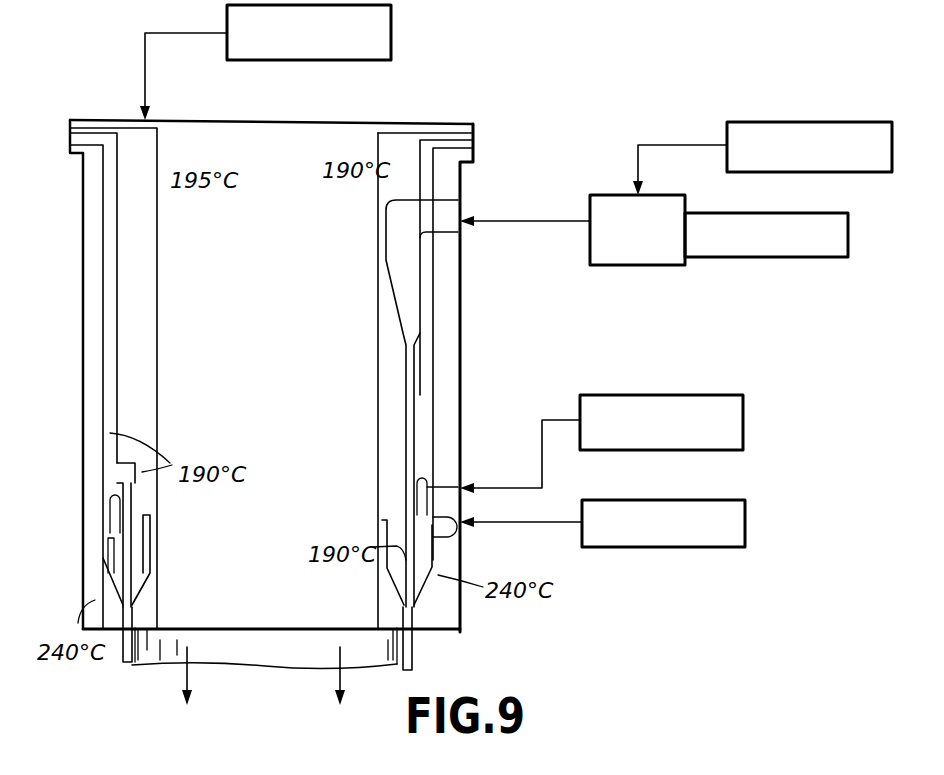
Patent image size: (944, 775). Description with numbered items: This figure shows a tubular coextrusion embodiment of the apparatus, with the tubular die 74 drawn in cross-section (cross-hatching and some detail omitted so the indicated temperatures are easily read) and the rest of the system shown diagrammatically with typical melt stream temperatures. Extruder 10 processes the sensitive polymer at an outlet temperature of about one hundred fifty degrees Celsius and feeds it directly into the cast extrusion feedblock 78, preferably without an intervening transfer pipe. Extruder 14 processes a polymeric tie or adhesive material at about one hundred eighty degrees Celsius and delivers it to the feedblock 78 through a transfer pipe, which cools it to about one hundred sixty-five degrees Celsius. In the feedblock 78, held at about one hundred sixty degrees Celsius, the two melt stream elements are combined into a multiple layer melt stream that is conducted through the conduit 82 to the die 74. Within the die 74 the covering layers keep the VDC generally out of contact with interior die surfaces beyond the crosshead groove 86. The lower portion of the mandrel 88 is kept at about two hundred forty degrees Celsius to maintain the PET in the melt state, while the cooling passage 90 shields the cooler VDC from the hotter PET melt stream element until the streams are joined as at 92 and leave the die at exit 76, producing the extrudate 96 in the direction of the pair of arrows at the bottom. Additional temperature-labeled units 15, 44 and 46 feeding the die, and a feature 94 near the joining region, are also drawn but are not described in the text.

The extruder 10 is at (830, 253).
The extruder 14 is at (880, 165).
The extruder 15 is at (728, 442).
The extruder 44 is at (376, 53).
The extruder 46 is at (735, 545).
The die 74 is at (276, 272).
The exit 76 is at (413, 637).
The feedblock 78 is at (660, 228).
The conduit 82 is at (582, 196).
The crosshead groove 86 is at (408, 333).
The mandrel 88 is at (362, 372).
The cooling passage 90 is at (412, 560).
The melt stream joining location 92 is at (410, 612).
The passage 94 is at (458, 535).
The extrudate 96 is at (372, 657).